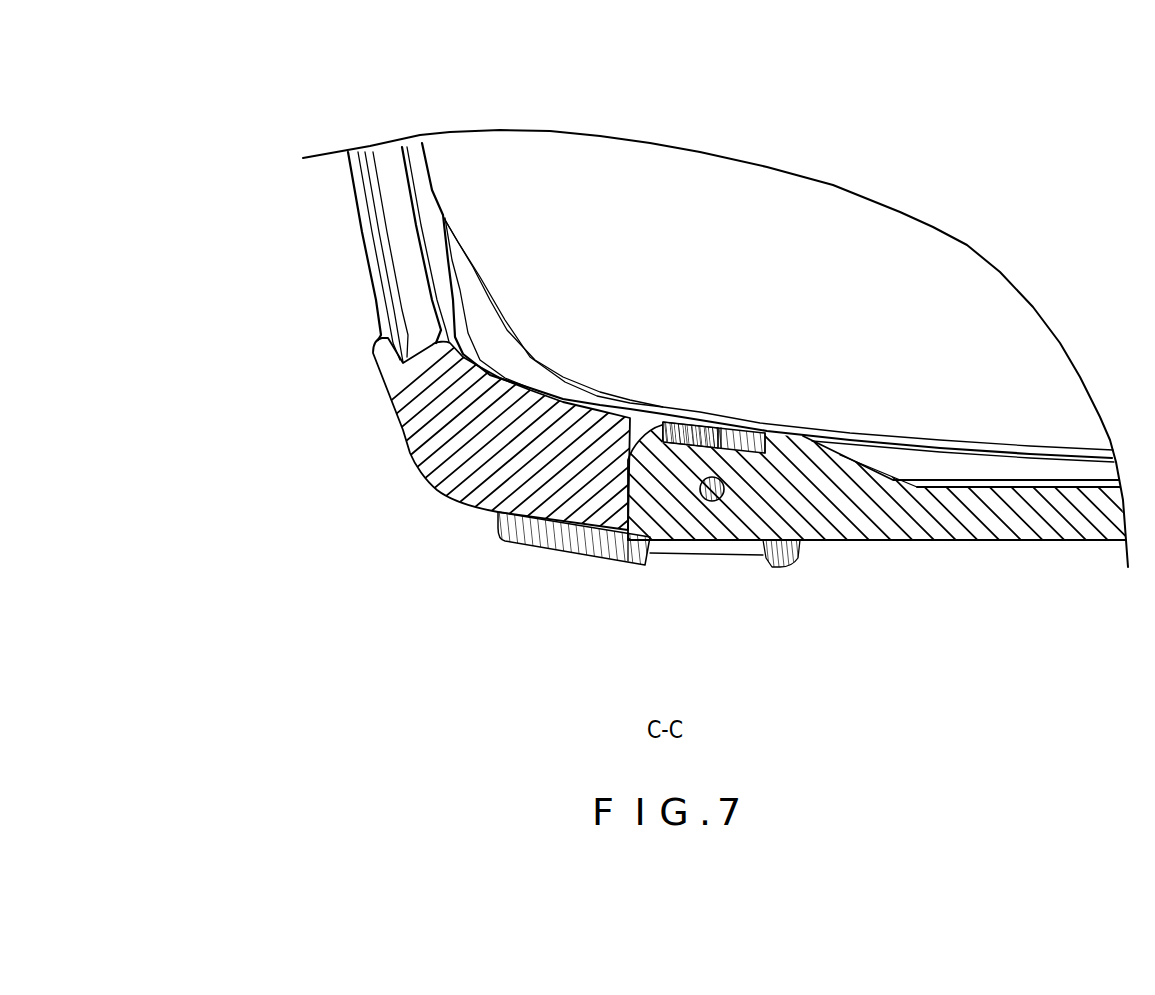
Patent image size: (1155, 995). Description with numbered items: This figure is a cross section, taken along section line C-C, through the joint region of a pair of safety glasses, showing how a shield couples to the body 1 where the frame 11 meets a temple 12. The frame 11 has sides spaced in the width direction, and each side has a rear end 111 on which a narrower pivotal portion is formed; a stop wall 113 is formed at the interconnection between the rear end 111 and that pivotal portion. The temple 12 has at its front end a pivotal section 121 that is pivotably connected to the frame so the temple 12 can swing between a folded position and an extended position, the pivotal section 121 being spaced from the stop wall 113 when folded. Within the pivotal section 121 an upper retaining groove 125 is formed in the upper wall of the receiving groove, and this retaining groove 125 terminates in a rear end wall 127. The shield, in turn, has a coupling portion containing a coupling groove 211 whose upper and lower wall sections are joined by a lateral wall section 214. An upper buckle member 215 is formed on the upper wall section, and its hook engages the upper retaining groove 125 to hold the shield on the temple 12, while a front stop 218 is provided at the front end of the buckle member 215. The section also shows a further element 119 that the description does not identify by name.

The body 1 is at (660, 348).
The frame 11 is at (688, 300).
The temple 12 is at (877, 516).
The rear end 111 is at (501, 476).
The stop wall 113 is at (842, 529).
The screw hole 119 is at (711, 554).
The pivotal section 121 is at (877, 539).
The upper retaining groove 125 is at (759, 240).
The rear end wall 127 is at (815, 262).
The coupling groove 211 is at (574, 592).
The lateral wall section 214 is at (693, 595).
The upper buckle member 215 is at (714, 246).
The front stop 218 is at (655, 254).